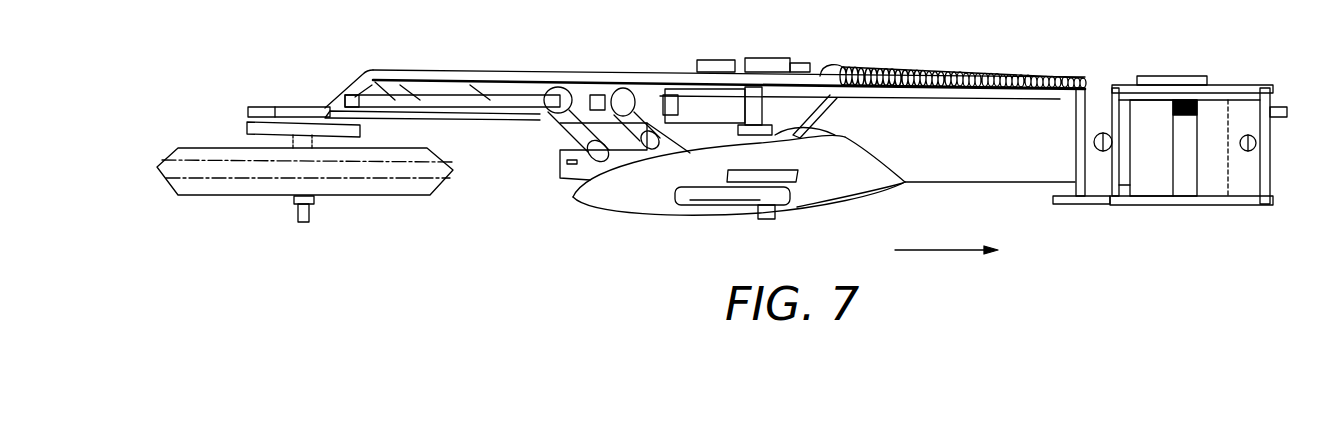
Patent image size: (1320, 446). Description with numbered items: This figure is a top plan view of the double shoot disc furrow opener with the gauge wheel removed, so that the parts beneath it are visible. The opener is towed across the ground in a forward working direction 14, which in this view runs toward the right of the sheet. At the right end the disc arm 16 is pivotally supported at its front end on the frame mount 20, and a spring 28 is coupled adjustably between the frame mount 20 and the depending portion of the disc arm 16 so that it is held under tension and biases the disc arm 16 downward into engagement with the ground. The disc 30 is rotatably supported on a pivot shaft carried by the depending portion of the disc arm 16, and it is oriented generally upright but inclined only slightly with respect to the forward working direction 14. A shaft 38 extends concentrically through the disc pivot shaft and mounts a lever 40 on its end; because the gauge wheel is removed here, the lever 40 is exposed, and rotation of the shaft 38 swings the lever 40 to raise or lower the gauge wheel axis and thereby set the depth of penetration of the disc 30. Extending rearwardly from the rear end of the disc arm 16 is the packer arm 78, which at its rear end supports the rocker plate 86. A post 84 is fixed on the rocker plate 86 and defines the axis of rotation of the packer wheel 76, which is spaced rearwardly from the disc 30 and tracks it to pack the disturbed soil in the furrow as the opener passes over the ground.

The forward working direction 14 is at (943, 250).
The disc arm 16 is at (1005, 145).
The frame mount 20 is at (1183, 200).
The spring 28 is at (950, 68).
The disc 30 is at (622, 208).
The shaft 38 is at (770, 220).
The lever 40 is at (708, 208).
The packer wheel 76 is at (190, 172).
The packer arm 78 is at (405, 75).
The post 84 is at (302, 216).
The rocker plate 86 is at (236, 128).